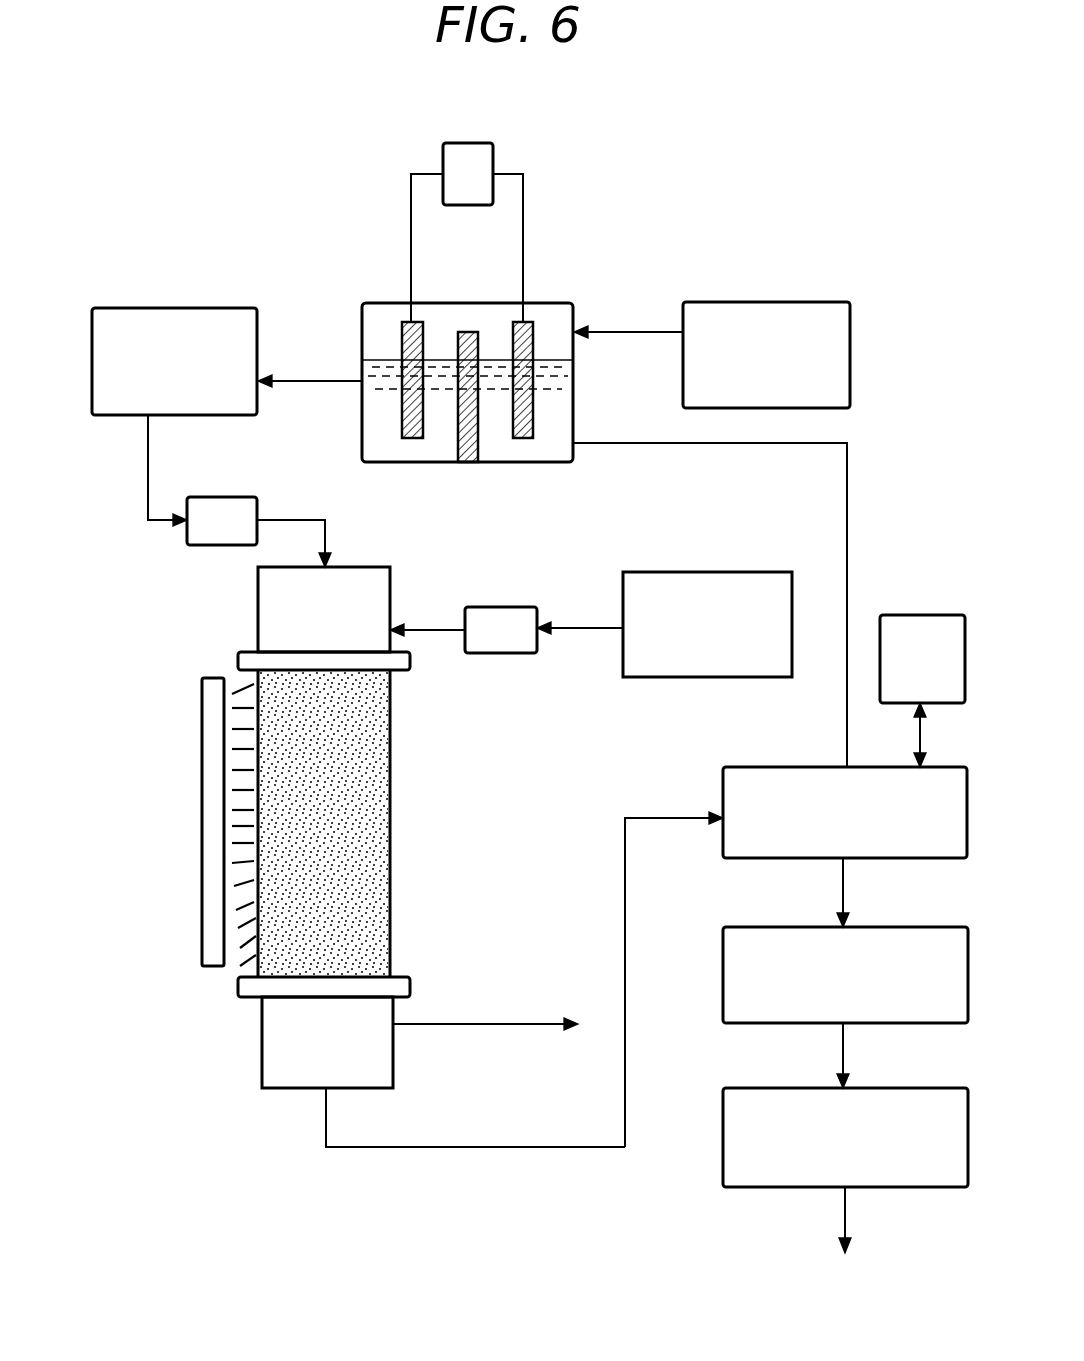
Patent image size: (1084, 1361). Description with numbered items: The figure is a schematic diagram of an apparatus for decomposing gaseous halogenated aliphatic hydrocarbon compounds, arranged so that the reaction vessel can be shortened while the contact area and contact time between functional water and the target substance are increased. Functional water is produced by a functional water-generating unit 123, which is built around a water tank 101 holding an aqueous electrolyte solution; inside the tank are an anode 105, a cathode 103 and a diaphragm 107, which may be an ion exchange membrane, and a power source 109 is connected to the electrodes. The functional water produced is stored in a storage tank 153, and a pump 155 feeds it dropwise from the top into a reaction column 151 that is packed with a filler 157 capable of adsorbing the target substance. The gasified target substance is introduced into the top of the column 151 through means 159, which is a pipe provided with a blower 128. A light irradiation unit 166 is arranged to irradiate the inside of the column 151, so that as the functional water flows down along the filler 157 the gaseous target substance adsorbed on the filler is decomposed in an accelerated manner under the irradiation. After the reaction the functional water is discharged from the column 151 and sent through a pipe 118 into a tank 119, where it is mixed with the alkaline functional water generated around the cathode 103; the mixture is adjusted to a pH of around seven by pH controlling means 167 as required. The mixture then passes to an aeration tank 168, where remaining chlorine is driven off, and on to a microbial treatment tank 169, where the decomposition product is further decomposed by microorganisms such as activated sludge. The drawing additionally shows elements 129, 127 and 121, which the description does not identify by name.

The power source 109 is at (470, 146).
The functional water-generating unit 123 is at (546, 288).
The water tank 101 is at (575, 425).
The anode 105 is at (412, 440).
The diaphragm 107 is at (468, 464).
The cathode 103 is at (524, 440).
The reagent supply 129 is at (712, 355).
The storage tank 153 is at (227, 417).
The pump 155 is at (228, 497).
The reaction column 151 is at (392, 790).
The filler 157 is at (370, 882).
The light irradiation unit 166 is at (202, 820).
The supply unit 127 is at (707, 624).
The means for introducing gasified target substance 159 is at (580, 627).
The blower 128 is at (502, 654).
The pH controlling means 167 is at (922, 691).
The tank 119 is at (770, 795).
The aeration tank 168 is at (845, 1007).
The microbial treatment tank 169 is at (845, 1170).
The outlet line 121 is at (485, 1026).
The pipe 118 is at (445, 1149).